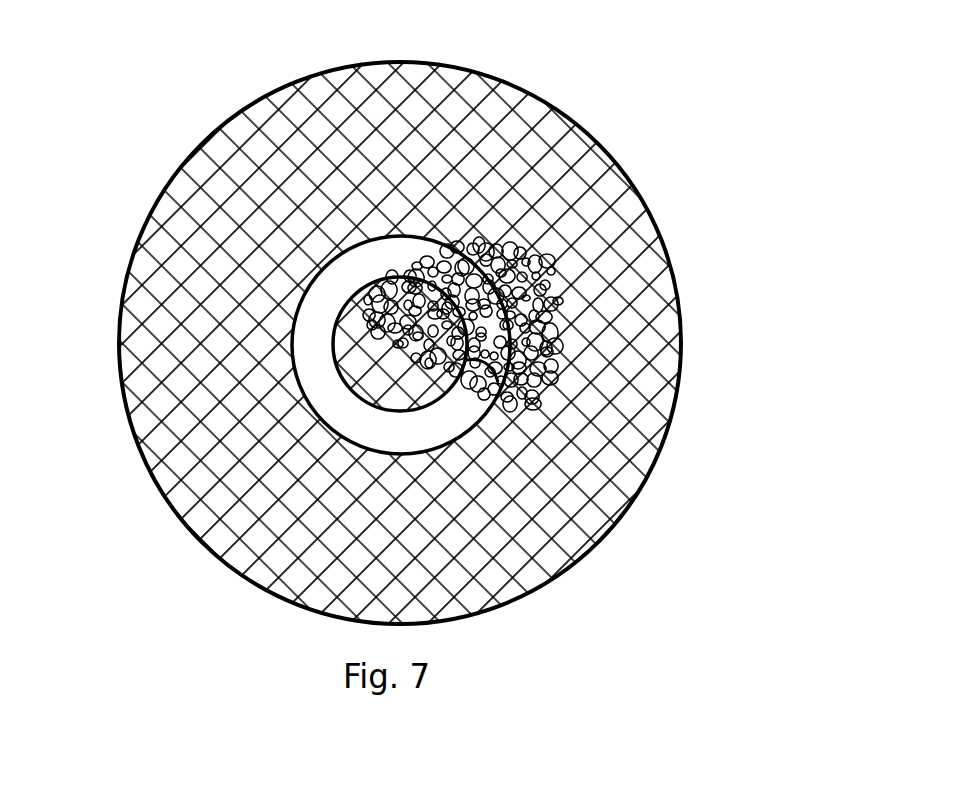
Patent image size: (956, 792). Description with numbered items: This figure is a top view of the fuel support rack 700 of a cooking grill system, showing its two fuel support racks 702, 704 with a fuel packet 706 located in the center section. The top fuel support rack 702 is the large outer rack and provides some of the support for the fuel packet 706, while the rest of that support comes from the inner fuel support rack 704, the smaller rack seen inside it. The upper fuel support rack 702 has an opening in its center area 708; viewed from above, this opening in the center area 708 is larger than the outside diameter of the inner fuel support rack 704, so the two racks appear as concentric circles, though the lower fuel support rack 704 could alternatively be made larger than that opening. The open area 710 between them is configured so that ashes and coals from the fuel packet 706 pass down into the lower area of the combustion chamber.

The fuel support rack 700 is at (167, 175).
The top fuel support rack 702 is at (313, 128).
The inner fuel support rack 704 is at (353, 400).
The fuel packet 706 is at (394, 278).
The center area 708 is at (290, 370).
The open area 710 is at (374, 421).